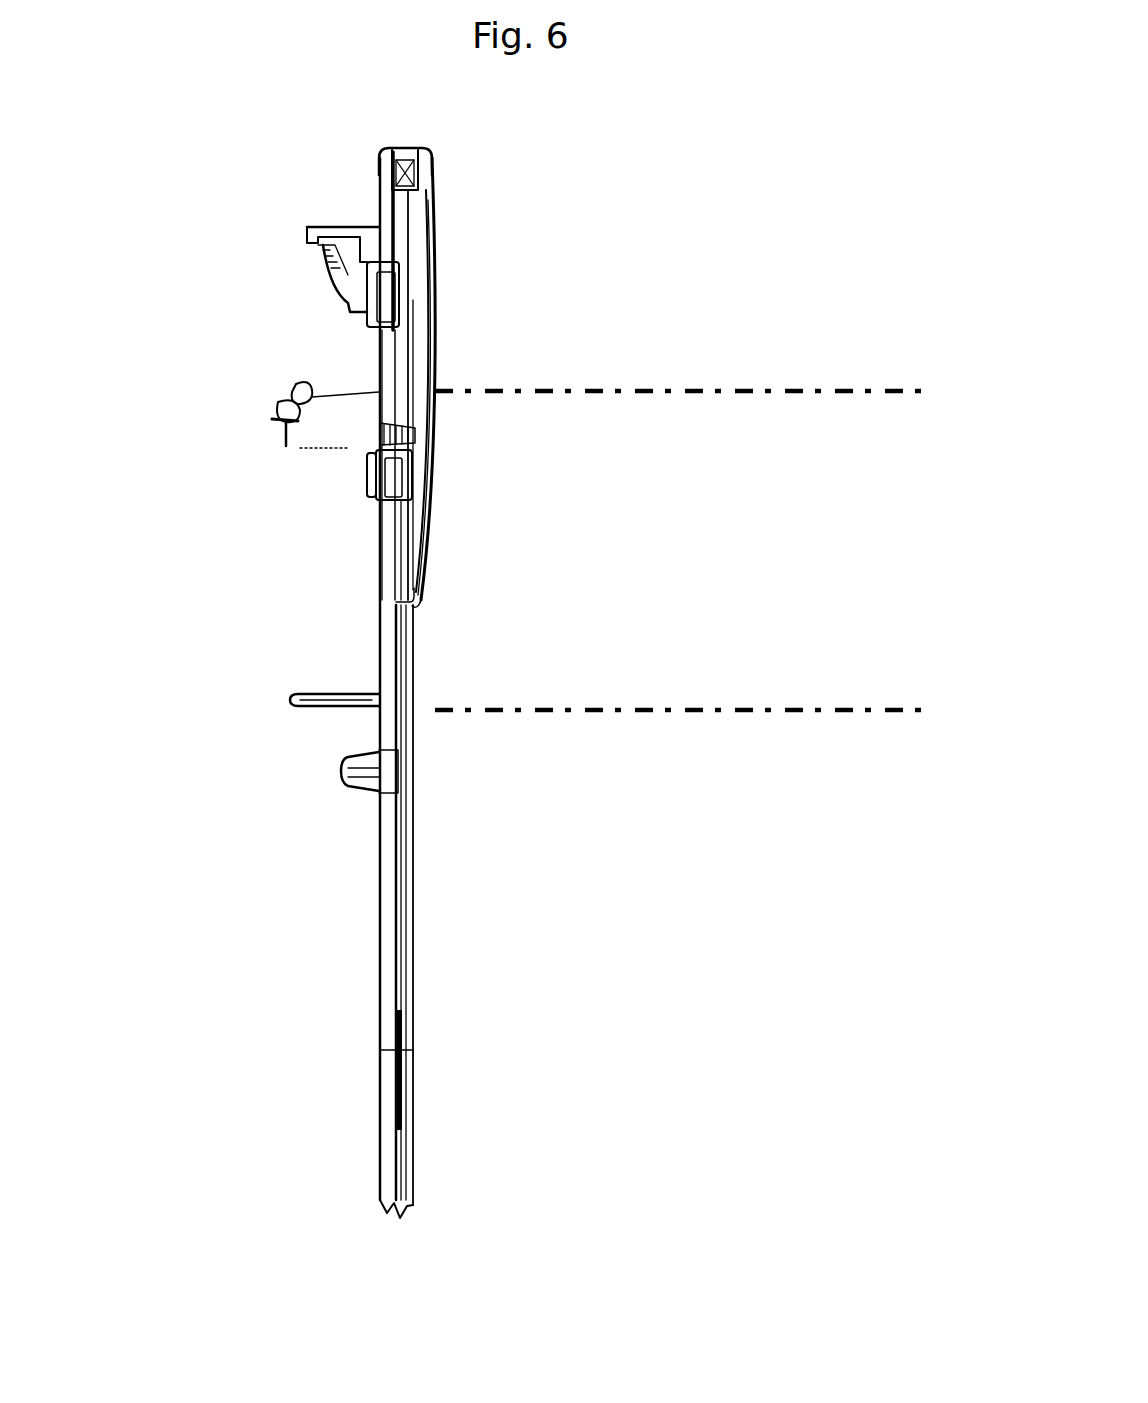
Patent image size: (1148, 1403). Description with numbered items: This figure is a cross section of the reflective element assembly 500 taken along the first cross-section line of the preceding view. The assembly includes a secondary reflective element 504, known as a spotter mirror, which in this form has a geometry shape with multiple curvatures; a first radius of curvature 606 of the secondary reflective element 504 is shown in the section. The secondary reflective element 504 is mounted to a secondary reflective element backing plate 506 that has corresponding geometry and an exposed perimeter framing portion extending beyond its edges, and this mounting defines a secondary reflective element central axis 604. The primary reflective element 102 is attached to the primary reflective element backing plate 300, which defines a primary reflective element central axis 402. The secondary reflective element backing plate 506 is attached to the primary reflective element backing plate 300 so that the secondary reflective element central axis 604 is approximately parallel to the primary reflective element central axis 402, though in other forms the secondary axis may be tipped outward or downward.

The reflective element assembly 500 is at (259, 226).
The secondary reflective element backing plate 506 is at (397, 220).
The secondary reflective element 504 is at (432, 280).
The secondary reflective element central axis 604 is at (680, 390).
The primary reflective element central axis 402 is at (665, 712).
The first radius of curvature 606 is at (434, 355).
The primary reflective element backing plate 300 is at (385, 862).
The primary reflective element 102 is at (405, 1005).